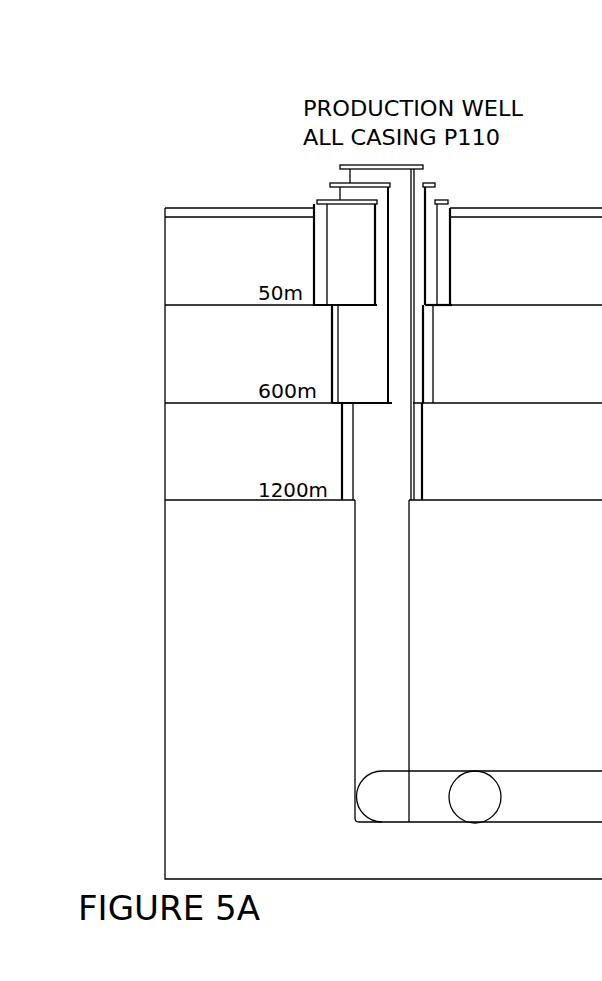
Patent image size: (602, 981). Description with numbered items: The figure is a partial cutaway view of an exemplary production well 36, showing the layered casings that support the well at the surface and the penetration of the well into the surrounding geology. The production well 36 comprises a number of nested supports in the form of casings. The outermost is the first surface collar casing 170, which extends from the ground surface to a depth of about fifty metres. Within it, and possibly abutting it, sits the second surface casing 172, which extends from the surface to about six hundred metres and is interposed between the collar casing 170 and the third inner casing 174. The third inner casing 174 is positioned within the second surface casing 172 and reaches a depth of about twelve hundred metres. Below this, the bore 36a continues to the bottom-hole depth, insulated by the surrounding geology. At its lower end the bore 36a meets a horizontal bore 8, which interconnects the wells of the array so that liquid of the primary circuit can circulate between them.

The production well 36 is at (243, 94).
The first surface collar casing 170 is at (313, 242).
The second surface casing 172 is at (332, 345).
The third inner casing 174 is at (342, 435).
The bore 36a is at (355, 623).
The horizontal bore 8 is at (521, 771).